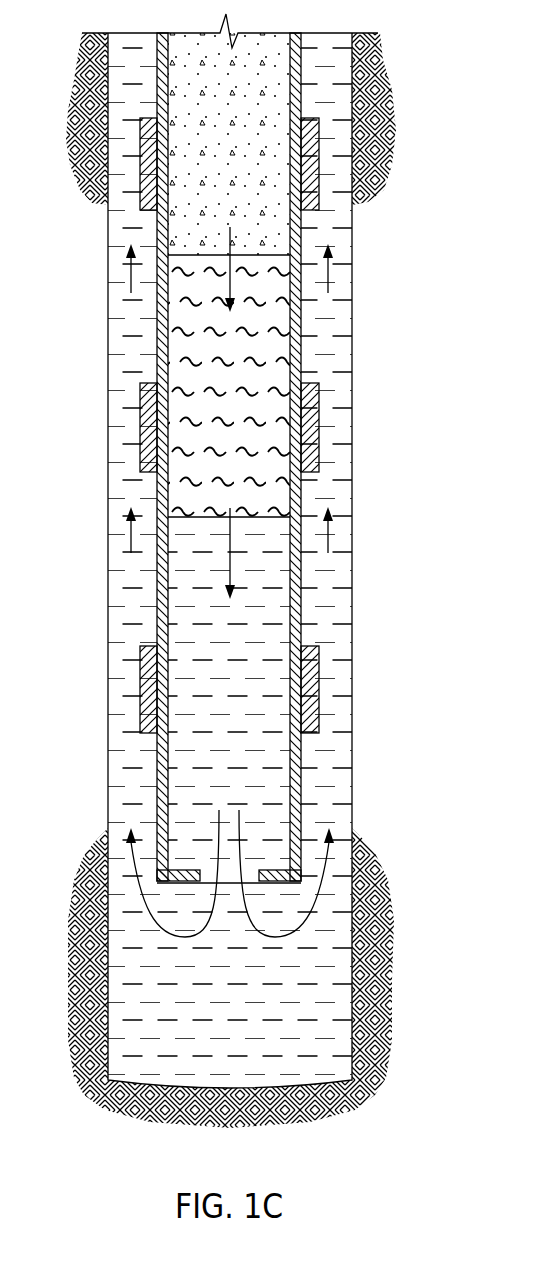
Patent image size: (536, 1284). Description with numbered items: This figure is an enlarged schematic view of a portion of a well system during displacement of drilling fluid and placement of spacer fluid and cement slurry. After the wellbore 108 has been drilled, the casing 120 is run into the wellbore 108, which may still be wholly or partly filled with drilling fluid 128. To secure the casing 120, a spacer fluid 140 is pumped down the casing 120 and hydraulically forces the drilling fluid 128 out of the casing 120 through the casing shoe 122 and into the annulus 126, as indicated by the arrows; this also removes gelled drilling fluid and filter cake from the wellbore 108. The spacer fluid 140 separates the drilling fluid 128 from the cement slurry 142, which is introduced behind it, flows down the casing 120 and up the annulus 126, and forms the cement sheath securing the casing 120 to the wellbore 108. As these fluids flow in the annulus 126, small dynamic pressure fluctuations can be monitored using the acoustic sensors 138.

The wellbore 108 is at (352, 757).
The casing 120 is at (157, 330).
The casing shoe 122 is at (301, 882).
The annulus 126 is at (315, 587).
The drilling fluid 128 is at (340, 1003).
The acoustic sensors 138 is at (319, 200).
The spacer fluid 140 is at (280, 318).
The cement slurry 142 is at (277, 85).